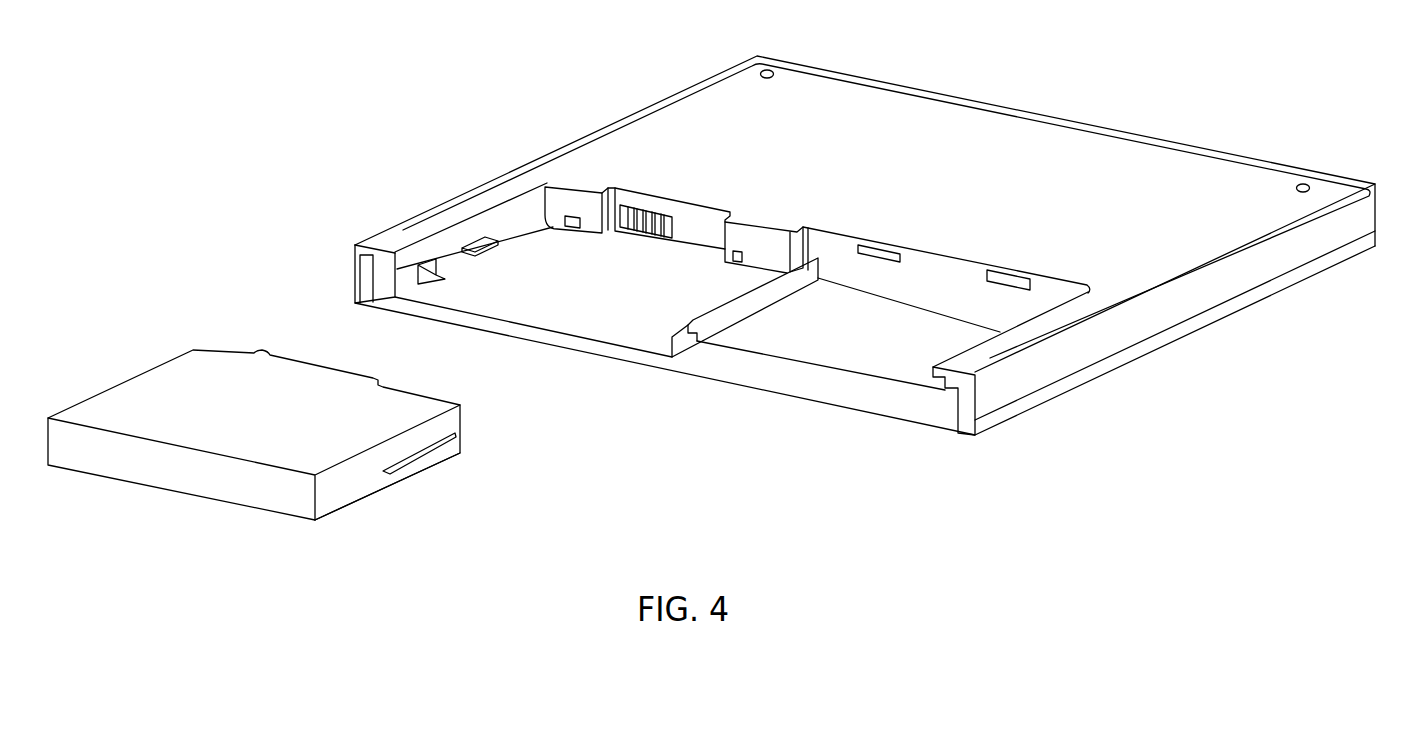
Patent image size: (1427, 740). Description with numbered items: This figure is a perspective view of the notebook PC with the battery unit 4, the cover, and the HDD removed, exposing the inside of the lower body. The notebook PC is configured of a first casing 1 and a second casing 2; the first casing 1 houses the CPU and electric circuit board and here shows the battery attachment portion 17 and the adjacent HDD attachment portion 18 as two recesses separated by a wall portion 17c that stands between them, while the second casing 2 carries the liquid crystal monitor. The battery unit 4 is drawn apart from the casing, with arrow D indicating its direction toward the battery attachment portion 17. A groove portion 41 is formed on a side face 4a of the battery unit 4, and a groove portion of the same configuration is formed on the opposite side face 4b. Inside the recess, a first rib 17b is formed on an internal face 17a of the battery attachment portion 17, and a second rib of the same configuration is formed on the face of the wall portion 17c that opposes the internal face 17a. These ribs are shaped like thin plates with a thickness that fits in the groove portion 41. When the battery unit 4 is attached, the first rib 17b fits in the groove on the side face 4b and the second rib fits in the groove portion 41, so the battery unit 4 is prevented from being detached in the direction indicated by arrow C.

The first casing 1 is at (1370, 213).
The second casing 2 is at (1367, 243).
The battery unit 4 is at (137, 393).
The side face 4a is at (352, 483).
The side face 4b is at (160, 360).
The groove portion 41 is at (413, 457).
The battery attachment portion 17 is at (592, 292).
The internal face 17a is at (531, 213).
The first rib 17b is at (478, 236).
The wall portion 17c is at (750, 303).
The HDD attachment portion 18 is at (840, 348).
The arrow C is at (585, 10).
The arrow D is at (457, 345).